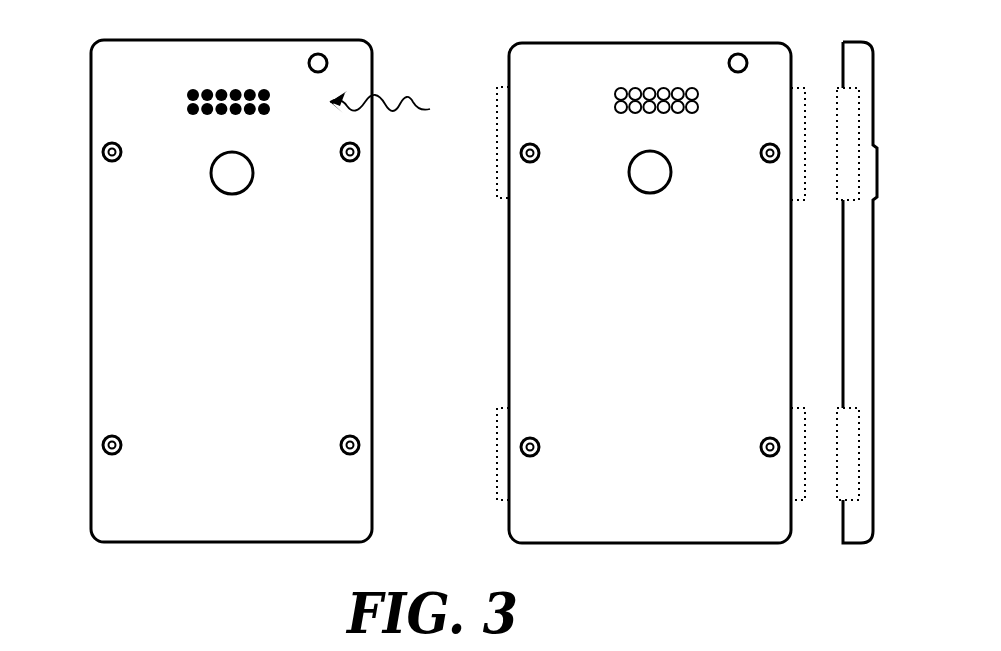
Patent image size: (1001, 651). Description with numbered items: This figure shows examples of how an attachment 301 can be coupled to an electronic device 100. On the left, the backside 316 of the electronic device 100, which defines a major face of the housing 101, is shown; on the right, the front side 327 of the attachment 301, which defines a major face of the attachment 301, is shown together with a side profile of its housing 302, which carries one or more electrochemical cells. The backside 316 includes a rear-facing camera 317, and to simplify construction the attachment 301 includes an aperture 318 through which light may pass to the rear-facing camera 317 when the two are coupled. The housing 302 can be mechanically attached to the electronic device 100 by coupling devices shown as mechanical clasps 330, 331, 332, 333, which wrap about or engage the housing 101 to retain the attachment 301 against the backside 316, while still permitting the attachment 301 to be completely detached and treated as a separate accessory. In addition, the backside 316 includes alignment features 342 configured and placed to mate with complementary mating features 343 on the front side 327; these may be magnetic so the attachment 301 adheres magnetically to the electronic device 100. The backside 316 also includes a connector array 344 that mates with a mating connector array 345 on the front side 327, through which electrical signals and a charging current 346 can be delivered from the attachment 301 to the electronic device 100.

The electronic device 100 is at (64, 220).
The housing 101 is at (97, 482).
The backside 316 is at (254, 318).
The rear-facing camera 317 is at (234, 180).
The aperture 318 is at (652, 178).
The front side 327 is at (634, 318).
The attachment 301 is at (518, 312).
The housing 302 is at (634, 543).
The mechanical clasp 330 is at (498, 160).
The mechanical clasp 331 is at (500, 447).
The mechanical clasp 332 is at (797, 95).
The mechanical clasp 333 is at (843, 474).
The alignment features 342 is at (123, 153).
The complementary mating features 343 is at (543, 155).
The connector array 344 is at (236, 92).
The mating connector array 345 is at (661, 90).
The charging current 346 is at (407, 96).